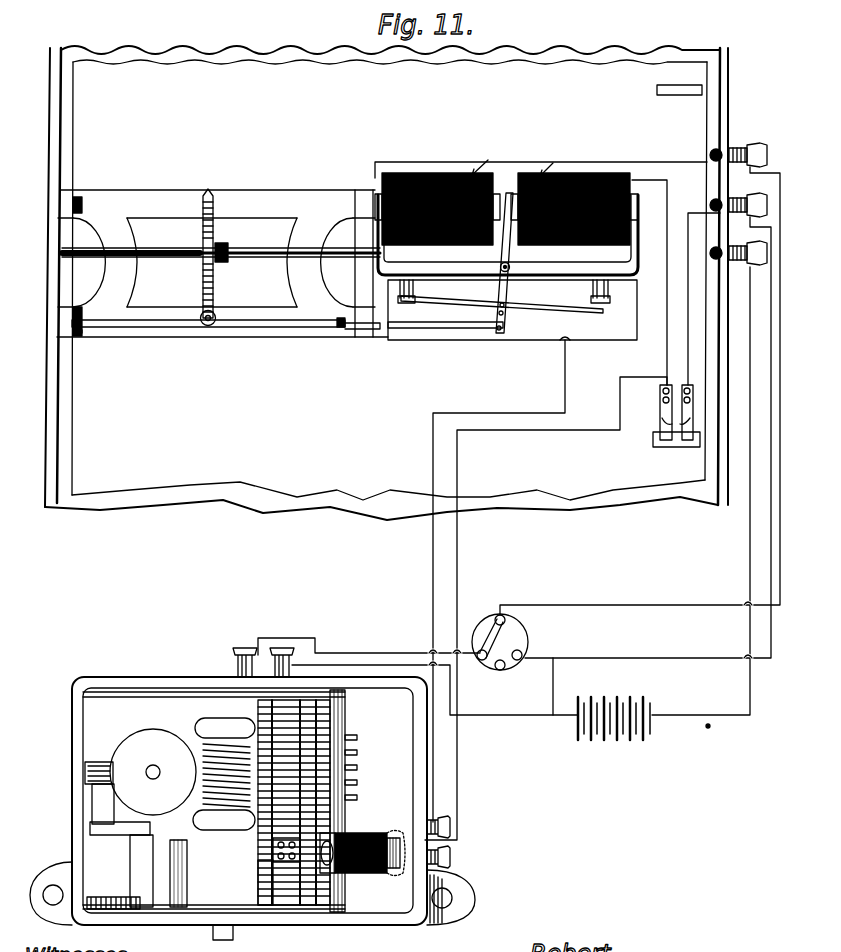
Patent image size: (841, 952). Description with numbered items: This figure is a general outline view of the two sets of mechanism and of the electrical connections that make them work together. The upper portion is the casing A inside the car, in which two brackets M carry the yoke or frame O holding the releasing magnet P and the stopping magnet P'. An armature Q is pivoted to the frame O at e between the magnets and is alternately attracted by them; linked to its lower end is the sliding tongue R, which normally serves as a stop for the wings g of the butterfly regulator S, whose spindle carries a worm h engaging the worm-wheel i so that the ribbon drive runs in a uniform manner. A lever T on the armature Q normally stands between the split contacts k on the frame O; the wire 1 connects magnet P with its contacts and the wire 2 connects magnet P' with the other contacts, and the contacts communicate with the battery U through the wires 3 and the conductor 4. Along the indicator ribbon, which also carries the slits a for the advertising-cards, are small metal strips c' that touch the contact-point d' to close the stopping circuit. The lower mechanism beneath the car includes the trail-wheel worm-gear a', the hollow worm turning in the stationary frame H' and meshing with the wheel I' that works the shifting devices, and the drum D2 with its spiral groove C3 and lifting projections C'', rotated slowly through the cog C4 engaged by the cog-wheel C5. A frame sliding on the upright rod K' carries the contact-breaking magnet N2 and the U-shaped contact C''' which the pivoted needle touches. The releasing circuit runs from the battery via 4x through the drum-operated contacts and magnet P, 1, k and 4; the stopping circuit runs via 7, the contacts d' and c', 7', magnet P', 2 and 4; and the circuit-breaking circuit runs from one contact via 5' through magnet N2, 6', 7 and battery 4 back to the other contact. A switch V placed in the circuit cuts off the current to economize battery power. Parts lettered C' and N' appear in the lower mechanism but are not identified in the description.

The casing A is at (53, 138).
The slits a is at (391, 121).
The brackets M is at (222, 263).
The worm-wheel i is at (215, 209).
The worm h is at (216, 313).
The butterfly regulator S is at (226, 328).
The wings g is at (116, 333).
The releasing magnet P is at (476, 161).
The stopping magnet P' is at (574, 165).
The yoke or frame O is at (508, 235).
The conducting-wire 1 is at (421, 262).
The conducting-wire 2 is at (580, 262).
The armature Q is at (504, 254).
The pivot e is at (512, 267).
The sliding tongue R is at (443, 330).
The split metal contacts k is at (416, 296).
The lever T is at (532, 308).
The conducting-wires 3 is at (503, 345).
The metal strips c' is at (677, 277).
The contact-point d' is at (664, 412).
The conductor 7' is at (664, 282).
The conductor 7 is at (650, 464).
The conductor 6' is at (546, 608).
The conductor 5' is at (499, 581).
The conductor 4 is at (747, 507).
The conductor 4x is at (500, 712).
The switch or cut-off V is at (500, 642).
The battery U is at (614, 705).
The cog C4 is at (283, 918).
The wheel I' is at (153, 772).
The stationary frame H' is at (302, 734).
The worm-gear a' is at (224, 787).
The upright rod K' is at (313, 801).
The drum D2 is at (358, 736).
The spiral groove C3 is at (357, 754).
The lifting points or projections C'' is at (366, 789).
The electromagnet N' is at (336, 853).
The contact-breaking electro-magnet N2 is at (395, 873).
The bracket C' is at (185, 873).
The cog-wheel C5 is at (115, 890).
The U-shaped contact C''' is at (259, 882).